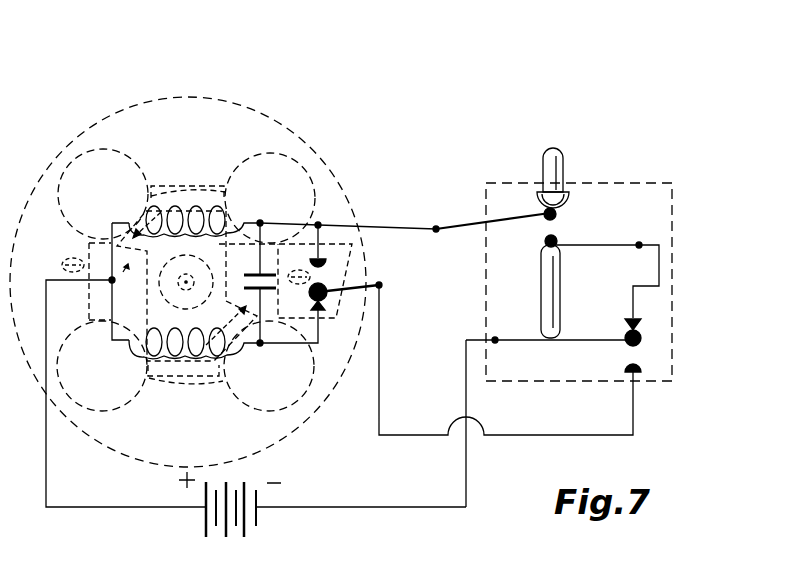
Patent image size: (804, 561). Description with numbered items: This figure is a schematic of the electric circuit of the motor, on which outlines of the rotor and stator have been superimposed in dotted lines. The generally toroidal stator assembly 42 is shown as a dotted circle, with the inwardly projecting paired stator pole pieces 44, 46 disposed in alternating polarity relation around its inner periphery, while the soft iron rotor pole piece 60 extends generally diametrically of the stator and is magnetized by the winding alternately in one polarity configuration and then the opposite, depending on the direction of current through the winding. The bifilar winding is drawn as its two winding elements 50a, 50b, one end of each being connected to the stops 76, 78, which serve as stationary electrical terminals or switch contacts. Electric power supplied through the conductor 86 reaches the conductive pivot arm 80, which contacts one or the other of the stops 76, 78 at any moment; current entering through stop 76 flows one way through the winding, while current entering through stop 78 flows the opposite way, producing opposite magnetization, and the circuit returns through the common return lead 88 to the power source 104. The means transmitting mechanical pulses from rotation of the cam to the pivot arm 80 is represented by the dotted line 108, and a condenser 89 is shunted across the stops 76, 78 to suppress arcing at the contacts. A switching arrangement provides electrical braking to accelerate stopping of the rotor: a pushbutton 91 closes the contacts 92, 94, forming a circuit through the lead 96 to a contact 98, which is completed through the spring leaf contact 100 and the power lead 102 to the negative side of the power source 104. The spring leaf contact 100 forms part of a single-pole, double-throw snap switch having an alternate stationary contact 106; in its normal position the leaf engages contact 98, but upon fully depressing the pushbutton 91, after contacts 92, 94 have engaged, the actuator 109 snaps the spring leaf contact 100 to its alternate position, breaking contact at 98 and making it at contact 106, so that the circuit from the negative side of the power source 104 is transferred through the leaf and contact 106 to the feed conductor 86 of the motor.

The stator assembly 42 is at (214, 113).
The stator pole piece 44 is at (200, 183).
The stator pole piece 46 is at (91, 301).
The winding element 50a is at (186, 279).
The winding element 50b is at (174, 332).
The rotor pole piece 60 is at (121, 272).
The stop 76 is at (327, 305).
The stop 78 is at (328, 268).
The pivot arm 80 is at (343, 282).
The conductor 86 is at (378, 398).
The common return lead 88 is at (48, 483).
The condenser 89 is at (266, 314).
The pushbutton 91 is at (560, 166).
The contact 92 is at (558, 220).
The contact 94 is at (558, 241).
The lead 96 is at (660, 269).
The contact 98 is at (645, 337).
The spring leaf contact 100 is at (560, 342).
The power lead 102 is at (466, 487).
The power source 104 is at (205, 519).
The stationary contact 106 is at (645, 371).
The dotted line 108 is at (262, 223).
The actuator 109 is at (554, 294).